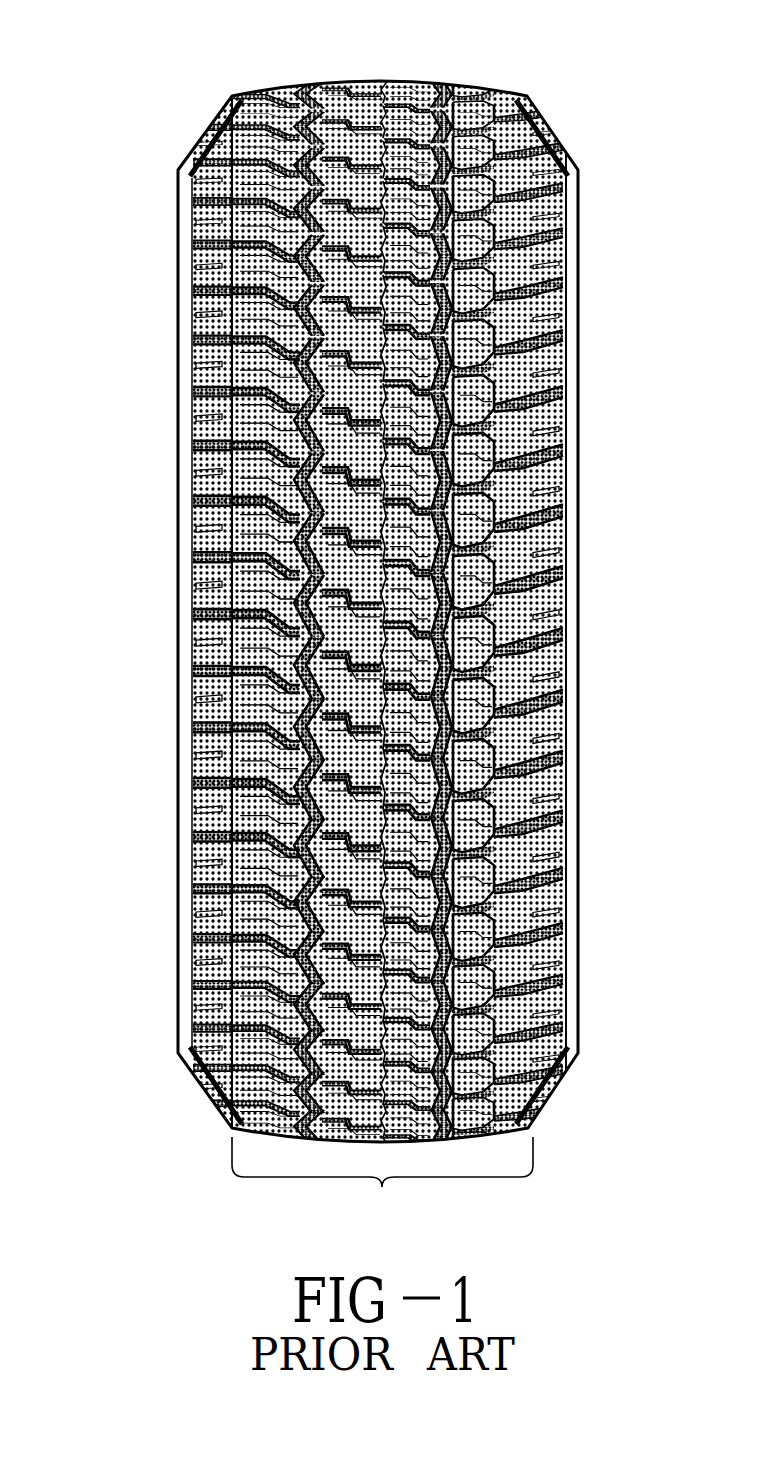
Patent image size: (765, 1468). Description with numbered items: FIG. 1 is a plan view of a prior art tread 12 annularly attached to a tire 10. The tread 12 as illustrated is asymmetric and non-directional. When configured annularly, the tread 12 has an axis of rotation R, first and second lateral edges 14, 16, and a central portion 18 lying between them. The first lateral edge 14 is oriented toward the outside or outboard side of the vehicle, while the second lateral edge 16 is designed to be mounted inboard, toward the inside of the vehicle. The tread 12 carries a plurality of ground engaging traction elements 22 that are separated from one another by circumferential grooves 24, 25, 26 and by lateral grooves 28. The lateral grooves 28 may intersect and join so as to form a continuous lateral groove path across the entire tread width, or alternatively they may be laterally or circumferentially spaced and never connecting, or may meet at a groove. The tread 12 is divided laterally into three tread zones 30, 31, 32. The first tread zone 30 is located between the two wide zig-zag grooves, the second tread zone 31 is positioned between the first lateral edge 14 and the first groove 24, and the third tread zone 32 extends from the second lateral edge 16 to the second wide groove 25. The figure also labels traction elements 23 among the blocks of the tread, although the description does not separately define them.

The tire 10 is at (176, 842).
The tread 12 is at (246, 962).
The first lateral edge 14 is at (524, 98).
The second lateral edge 16 is at (232, 99).
The central portion 18 is at (382, 1183).
The ground engaging traction elements 22 is at (345, 378).
The tread blocks 23 is at (403, 312).
The circumferential groove 24 is at (432, 518).
The circumferential groove 25 is at (297, 555).
The circumferential groove 26 is at (358, 463).
The lateral grooves 28 is at (240, 670).
The first tread zone 30 is at (363, 96).
The second tread zone 31 is at (461, 97).
The third tread zone 32 is at (280, 104).